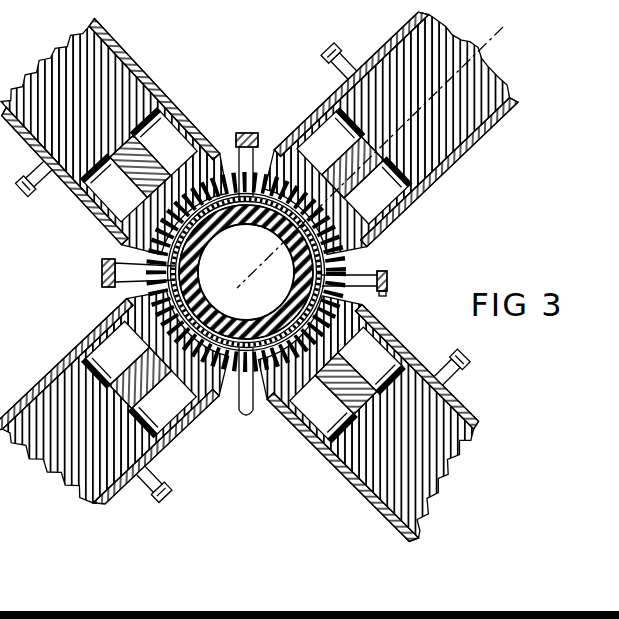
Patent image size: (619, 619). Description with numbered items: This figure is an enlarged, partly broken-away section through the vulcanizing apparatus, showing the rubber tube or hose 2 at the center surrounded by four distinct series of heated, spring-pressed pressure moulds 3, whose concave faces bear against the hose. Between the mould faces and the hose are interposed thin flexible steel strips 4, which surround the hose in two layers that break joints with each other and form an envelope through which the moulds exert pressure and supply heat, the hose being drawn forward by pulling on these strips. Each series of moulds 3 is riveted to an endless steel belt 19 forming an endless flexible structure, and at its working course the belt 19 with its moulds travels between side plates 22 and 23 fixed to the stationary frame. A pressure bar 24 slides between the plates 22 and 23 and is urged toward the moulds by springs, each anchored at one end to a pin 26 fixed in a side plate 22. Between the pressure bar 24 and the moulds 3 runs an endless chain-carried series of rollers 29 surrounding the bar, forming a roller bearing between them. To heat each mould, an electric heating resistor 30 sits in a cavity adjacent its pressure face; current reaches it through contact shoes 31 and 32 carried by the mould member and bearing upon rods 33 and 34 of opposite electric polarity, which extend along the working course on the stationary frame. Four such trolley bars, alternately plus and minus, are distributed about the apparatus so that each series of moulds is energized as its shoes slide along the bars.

The rubber tube or hose 2 is at (208, 244).
The pressure moulds 3 is at (218, 160).
The thin flexible steel strips 4 is at (495, 40).
The endless steel belt 19 is at (402, 214).
The side plate 22 is at (326, 97).
The side plate 23 is at (480, 151).
The pressure bar 24 is at (514, 112).
The pin 26 is at (332, 54).
The rollers 29 is at (418, 200).
The electric heating resistor 30 is at (348, 272).
The contact shoe 31 is at (262, 137).
The contact shoe 32 is at (392, 278).
The rod 33 is at (243, 137).
The rod 34 is at (387, 292).